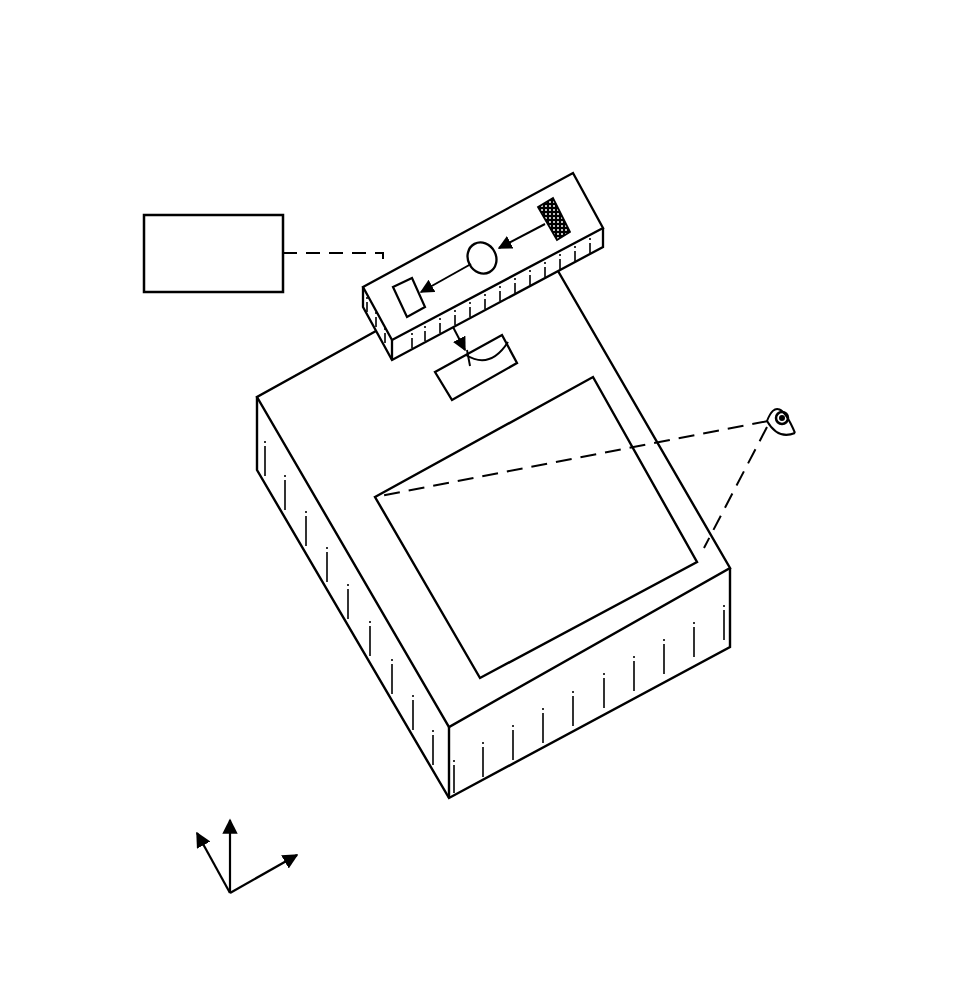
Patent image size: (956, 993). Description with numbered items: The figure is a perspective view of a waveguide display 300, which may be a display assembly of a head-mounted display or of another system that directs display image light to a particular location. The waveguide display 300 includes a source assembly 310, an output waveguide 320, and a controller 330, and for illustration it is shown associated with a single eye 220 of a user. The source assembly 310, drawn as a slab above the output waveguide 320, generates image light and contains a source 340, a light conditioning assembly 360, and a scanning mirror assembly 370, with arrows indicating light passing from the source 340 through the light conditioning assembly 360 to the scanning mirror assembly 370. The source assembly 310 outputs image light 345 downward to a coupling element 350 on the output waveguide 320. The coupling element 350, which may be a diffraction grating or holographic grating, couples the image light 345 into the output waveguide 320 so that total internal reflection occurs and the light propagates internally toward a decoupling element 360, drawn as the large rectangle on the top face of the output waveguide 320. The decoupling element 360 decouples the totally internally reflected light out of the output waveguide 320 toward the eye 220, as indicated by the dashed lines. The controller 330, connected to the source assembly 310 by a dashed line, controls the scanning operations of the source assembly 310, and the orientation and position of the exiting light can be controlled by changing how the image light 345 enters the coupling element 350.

The waveguide display 300 is at (83, 26).
The source assembly 310 is at (580, 207).
The output waveguide 320 is at (423, 638).
The controller 330 is at (205, 215).
The source 340 is at (550, 201).
The image light 345 is at (502, 338).
The coupling element 350 is at (508, 362).
The light conditioning assembly / decoupling element 360 is at (478, 250).
The scanning mirror assembly 370 is at (400, 283).
The eye 220 is at (790, 437).